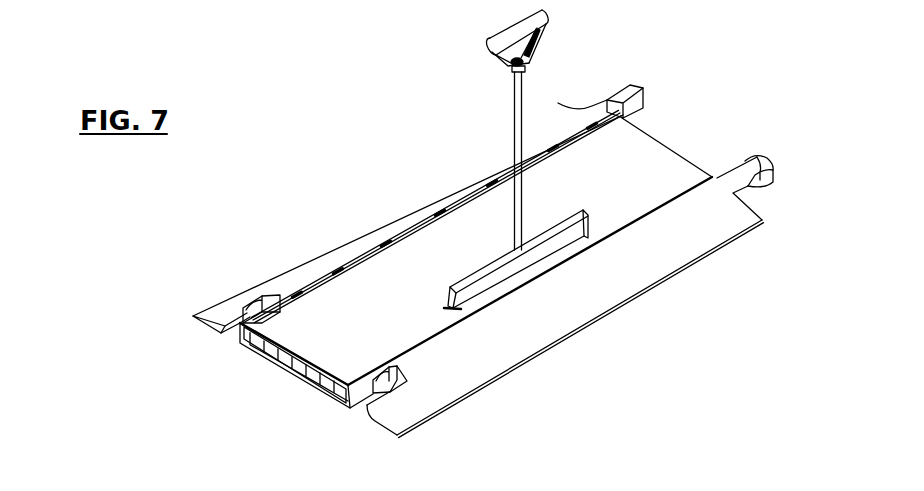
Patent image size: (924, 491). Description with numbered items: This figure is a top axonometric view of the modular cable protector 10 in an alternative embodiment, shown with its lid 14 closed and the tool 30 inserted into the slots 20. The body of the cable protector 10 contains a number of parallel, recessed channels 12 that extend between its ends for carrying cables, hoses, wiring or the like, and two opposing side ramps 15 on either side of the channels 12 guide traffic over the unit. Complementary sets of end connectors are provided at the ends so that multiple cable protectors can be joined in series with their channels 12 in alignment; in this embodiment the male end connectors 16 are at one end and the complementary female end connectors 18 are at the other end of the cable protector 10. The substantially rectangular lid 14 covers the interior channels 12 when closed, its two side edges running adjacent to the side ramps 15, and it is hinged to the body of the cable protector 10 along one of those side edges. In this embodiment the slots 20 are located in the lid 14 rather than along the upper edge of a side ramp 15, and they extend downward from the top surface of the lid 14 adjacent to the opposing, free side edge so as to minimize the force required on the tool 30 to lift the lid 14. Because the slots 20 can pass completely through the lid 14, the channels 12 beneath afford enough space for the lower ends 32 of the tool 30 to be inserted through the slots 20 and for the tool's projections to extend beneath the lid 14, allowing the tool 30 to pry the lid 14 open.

The cable protector 10 is at (227, 272).
The channels 12 is at (291, 376).
The lid 14 is at (438, 251).
The side ramps 15 is at (342, 242).
The male end connectors 16 is at (763, 162).
The female end connectors 18 is at (228, 338).
The slots 20 is at (460, 316).
The tool 30 is at (527, 106).
The lower ends 32 is at (448, 307).